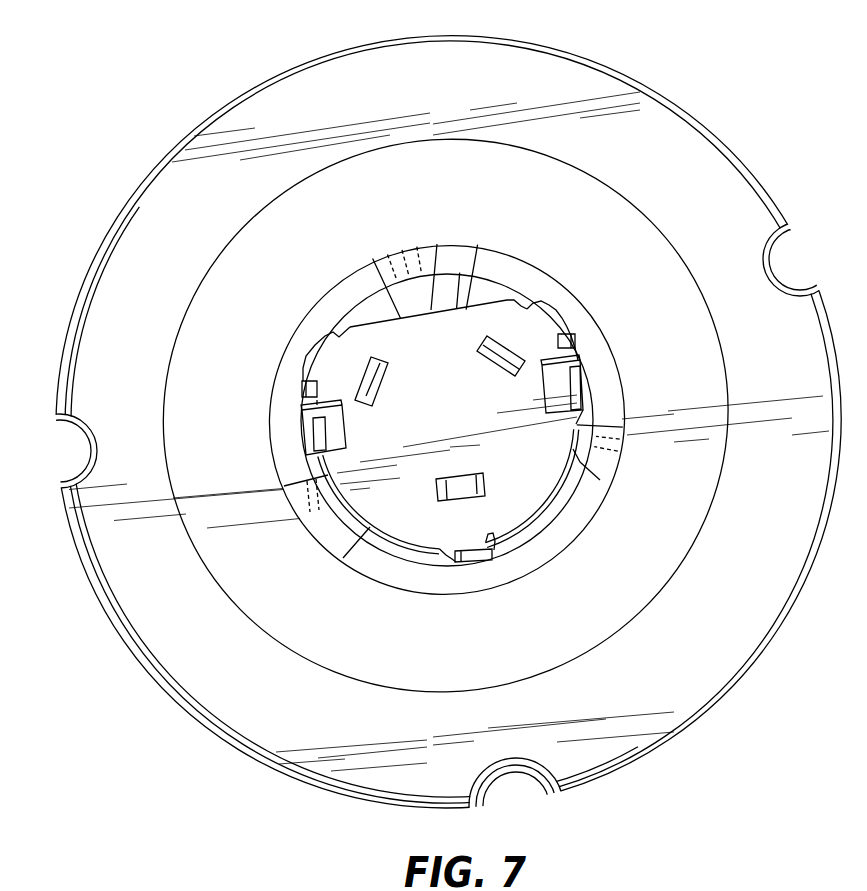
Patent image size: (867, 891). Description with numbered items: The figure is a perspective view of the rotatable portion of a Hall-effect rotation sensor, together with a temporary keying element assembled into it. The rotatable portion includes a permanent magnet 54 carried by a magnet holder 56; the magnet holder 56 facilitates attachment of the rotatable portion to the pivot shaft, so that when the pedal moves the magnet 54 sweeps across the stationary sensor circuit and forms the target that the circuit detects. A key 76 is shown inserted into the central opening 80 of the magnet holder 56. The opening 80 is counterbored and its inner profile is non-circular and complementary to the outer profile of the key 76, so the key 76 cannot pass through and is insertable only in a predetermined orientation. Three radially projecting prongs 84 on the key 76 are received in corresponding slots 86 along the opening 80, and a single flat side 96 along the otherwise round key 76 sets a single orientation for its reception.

The magnet 54 is at (263, 572).
The magnet holder 56 is at (280, 727).
The key 76 is at (517, 470).
The central opening 80 is at (485, 286).
The prongs 84 is at (315, 343).
The slots 86 is at (301, 388).
The flat side 96 is at (438, 246).